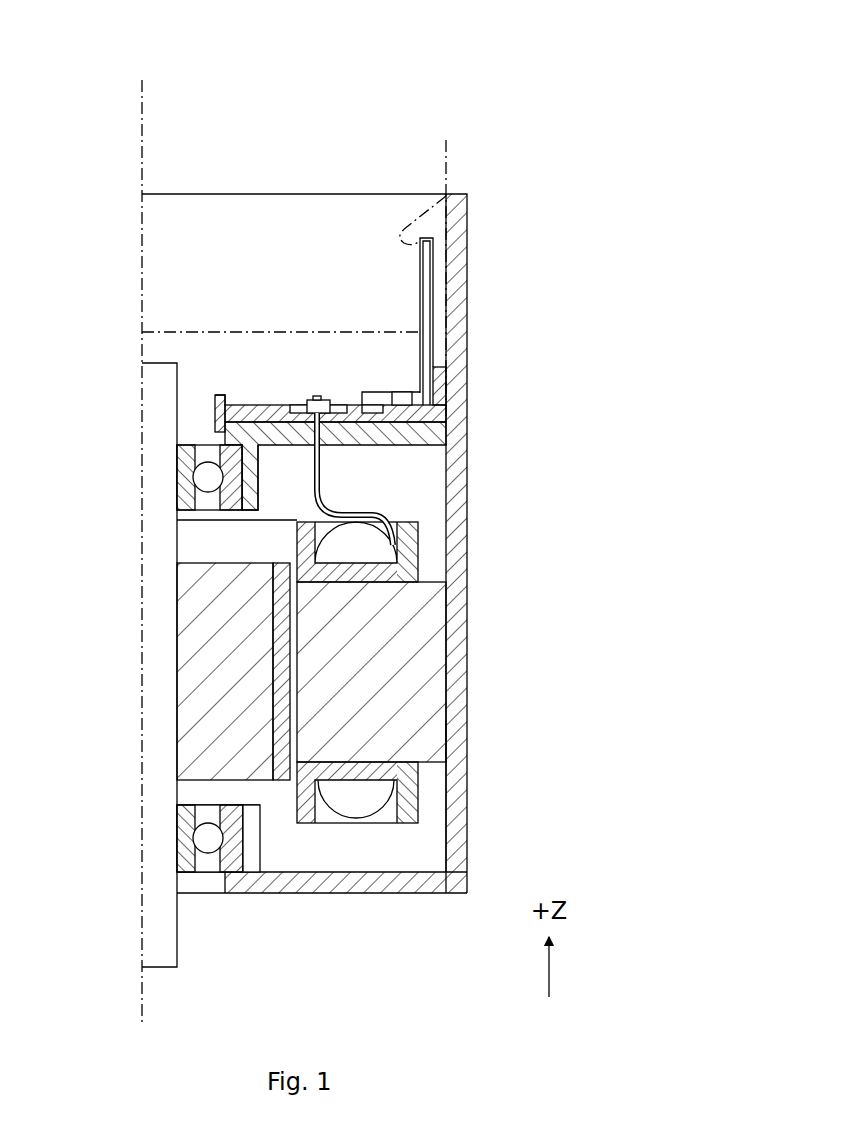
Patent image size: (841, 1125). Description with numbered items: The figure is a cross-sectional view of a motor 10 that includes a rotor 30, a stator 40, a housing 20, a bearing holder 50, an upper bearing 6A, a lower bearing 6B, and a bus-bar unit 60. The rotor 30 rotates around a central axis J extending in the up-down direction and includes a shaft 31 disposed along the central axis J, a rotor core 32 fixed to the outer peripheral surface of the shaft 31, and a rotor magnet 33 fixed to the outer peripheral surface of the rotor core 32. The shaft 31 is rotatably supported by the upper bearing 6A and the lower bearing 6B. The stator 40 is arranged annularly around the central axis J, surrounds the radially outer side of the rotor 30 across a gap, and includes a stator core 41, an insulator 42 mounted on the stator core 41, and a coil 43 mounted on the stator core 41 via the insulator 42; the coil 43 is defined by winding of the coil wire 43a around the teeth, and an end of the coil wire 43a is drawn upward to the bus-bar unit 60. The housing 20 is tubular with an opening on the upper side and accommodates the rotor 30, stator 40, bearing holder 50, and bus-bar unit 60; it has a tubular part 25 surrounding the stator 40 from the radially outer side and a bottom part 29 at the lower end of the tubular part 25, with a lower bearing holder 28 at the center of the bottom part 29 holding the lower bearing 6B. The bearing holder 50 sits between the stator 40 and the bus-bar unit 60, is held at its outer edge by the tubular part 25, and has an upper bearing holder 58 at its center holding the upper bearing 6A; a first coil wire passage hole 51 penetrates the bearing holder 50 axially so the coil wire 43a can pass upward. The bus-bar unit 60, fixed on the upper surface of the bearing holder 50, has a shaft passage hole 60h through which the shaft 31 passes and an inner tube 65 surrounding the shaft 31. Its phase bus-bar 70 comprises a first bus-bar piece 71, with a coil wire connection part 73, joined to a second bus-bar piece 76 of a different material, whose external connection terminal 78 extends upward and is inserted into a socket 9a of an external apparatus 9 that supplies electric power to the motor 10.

The motor 10 is at (333, 514).
The central axis J is at (142, 112).
The external apparatus 9 is at (460, 269).
The socket 9a is at (441, 199).
The housing 20 is at (372, 529).
The tubular part 25 is at (457, 797).
The bottom part 29 is at (379, 893).
The lower bearing holder 28 is at (262, 842).
The shaft 31 is at (155, 553).
The rotor 30 is at (306, 662).
The rotor core 32 is at (187, 638).
The rotor magnet 33 is at (278, 673).
The stator 40 is at (435, 618).
The stator core 41 is at (433, 664).
The insulator 42 is at (420, 572).
The coil 43 is at (419, 528).
The coil wire 43a is at (322, 482).
The bearing holder 50 is at (375, 353).
The first coil wire passage hole 51 is at (306, 466).
The upper bearing holder 58 is at (243, 455).
The bus-bar unit 60 is at (443, 360).
The shaft passage hole 60h is at (216, 396).
The inner tube 65 is at (223, 403).
The phase bus-bar 70 is at (505, 312).
The first bus-bar piece 71 is at (340, 396).
The coil wire connection part 73 is at (313, 398).
The second bus-bar piece 76 is at (389, 389).
The external connection terminal 78 is at (432, 292).
The upper bearing 6A is at (186, 479).
The lower bearing 6B is at (192, 846).